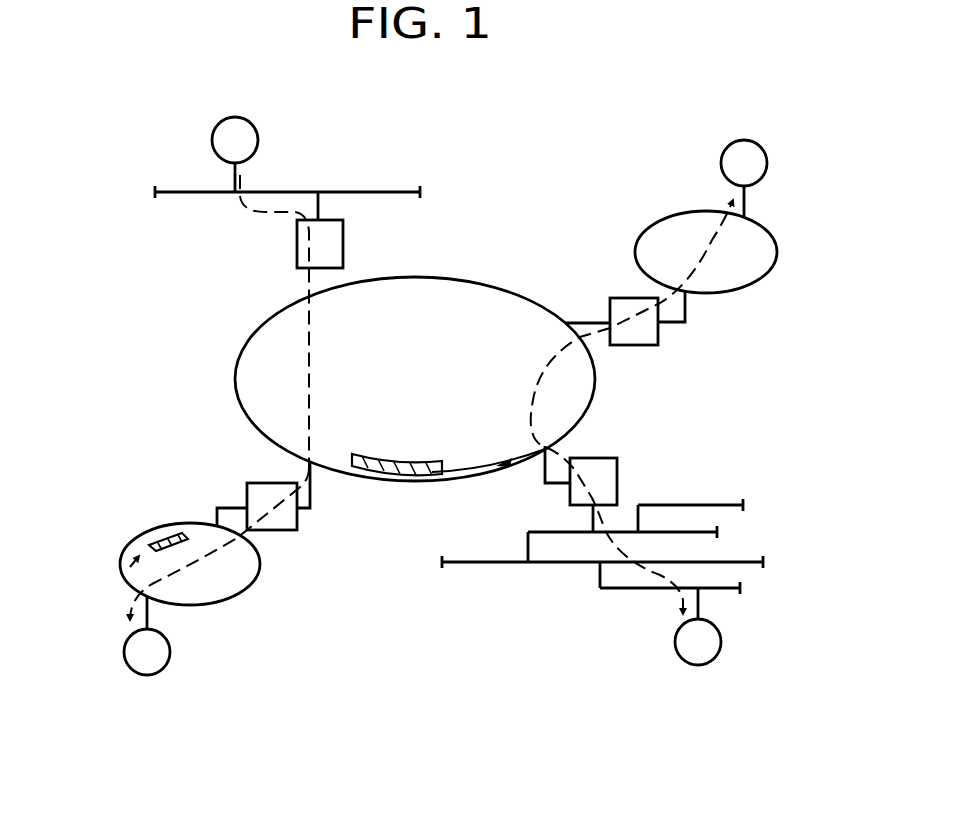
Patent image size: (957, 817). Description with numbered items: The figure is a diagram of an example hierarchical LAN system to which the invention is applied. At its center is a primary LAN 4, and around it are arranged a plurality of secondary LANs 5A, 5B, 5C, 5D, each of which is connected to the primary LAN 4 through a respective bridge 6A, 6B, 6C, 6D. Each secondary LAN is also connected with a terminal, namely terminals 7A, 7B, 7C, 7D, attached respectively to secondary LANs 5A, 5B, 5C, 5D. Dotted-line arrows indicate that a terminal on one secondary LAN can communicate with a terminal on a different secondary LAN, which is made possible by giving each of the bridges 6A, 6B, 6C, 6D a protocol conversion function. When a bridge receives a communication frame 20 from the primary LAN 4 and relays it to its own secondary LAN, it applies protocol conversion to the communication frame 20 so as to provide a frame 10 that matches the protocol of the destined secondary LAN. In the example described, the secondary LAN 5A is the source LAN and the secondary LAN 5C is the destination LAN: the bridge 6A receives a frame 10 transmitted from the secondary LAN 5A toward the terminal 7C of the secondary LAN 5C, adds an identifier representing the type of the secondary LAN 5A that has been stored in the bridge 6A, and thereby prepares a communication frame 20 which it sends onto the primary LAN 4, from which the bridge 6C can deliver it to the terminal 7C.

The primary LAN 4 is at (235, 375).
The communication frame 20 is at (400, 460).
The frame 10 is at (150, 537).
The secondary LAN 5A is at (232, 600).
The secondary LAN 5B is at (773, 263).
The secondary LAN 5C is at (405, 190).
The secondary LAN 5D is at (555, 562).
The bridge 6A is at (280, 530).
The bridge 6B is at (648, 345).
The bridge 6C is at (343, 235).
The bridge 6D is at (617, 478).
The terminal 7A is at (147, 675).
The terminal 7B is at (767, 163).
The terminal 7C is at (212, 141).
The terminal 7D is at (698, 665).